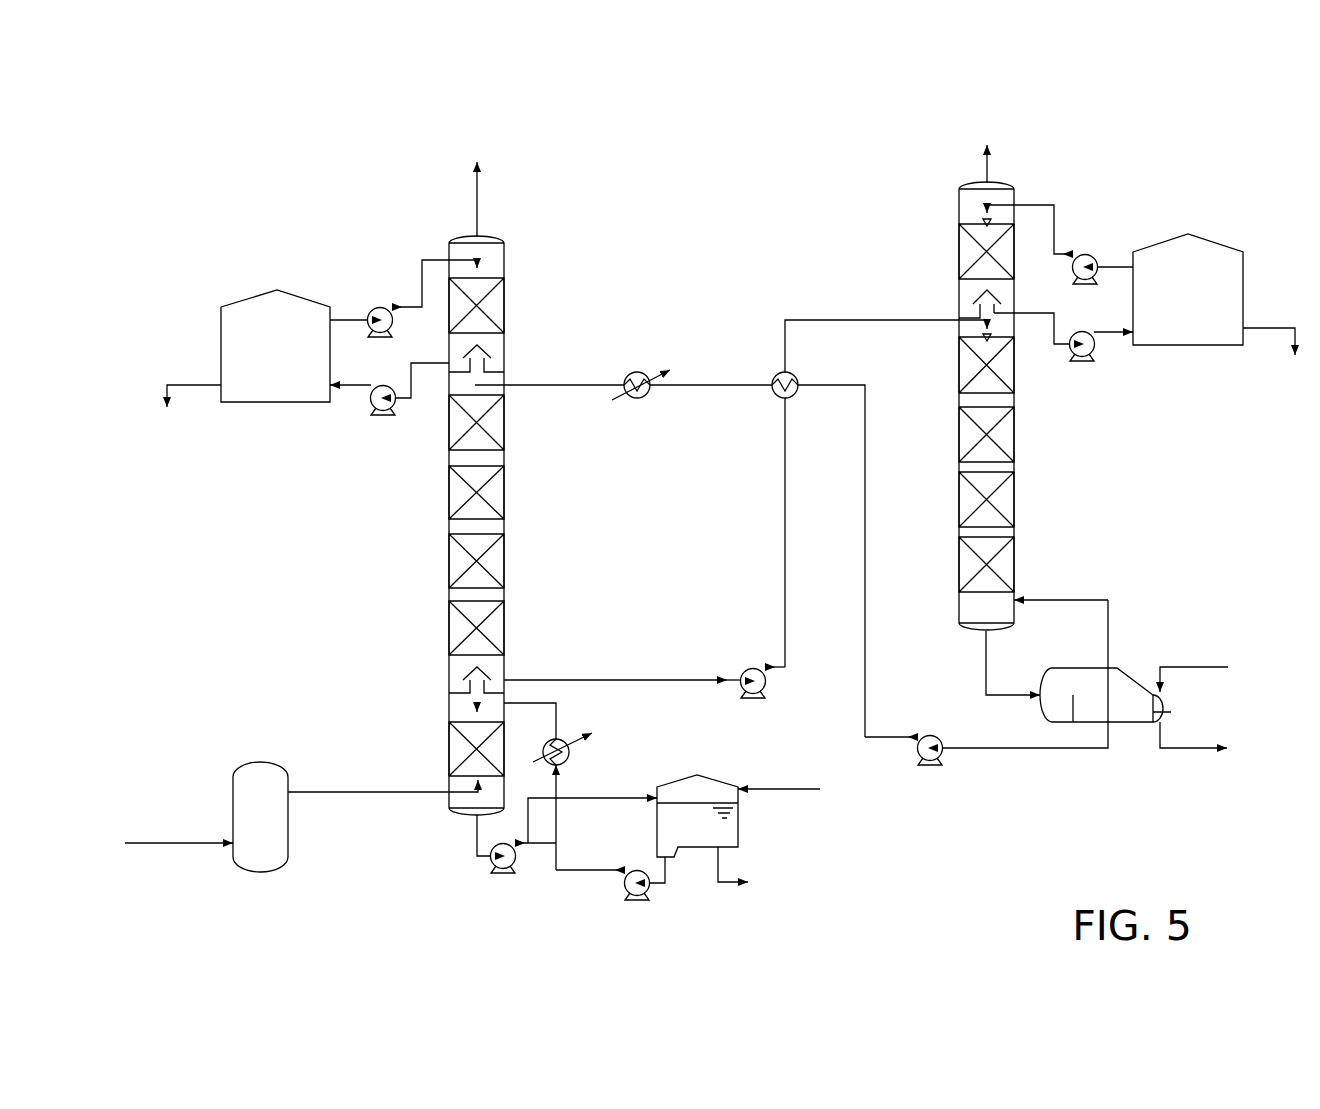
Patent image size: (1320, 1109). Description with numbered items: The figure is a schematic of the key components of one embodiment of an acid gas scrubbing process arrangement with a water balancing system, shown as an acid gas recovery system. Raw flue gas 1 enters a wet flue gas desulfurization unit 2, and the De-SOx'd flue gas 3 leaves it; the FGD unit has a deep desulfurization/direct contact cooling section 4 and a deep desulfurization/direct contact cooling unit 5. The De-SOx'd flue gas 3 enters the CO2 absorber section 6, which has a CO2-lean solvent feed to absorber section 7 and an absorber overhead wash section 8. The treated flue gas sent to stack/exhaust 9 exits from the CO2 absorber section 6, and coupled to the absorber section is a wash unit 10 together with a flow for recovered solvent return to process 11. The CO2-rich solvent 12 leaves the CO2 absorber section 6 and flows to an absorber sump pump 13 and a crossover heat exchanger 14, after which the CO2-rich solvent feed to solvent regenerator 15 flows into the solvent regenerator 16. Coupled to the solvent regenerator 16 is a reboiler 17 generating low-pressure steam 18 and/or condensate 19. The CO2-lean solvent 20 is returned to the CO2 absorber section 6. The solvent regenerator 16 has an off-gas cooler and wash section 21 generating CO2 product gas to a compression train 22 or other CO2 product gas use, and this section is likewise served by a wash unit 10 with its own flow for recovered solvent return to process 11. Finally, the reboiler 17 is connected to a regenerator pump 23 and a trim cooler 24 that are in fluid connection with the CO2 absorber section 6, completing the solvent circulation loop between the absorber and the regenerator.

The raw flue gas 1 is at (179, 829).
The wet flue gas desulfurization unit 2 is at (260, 817).
The De-SOx'd flue gas 3 is at (383, 777).
The deep desulfurization/direct contact cooling section 4 is at (447, 745).
The deep desulfurization/direct contact cooling unit 5 is at (648, 801).
The CO2 absorber section 6 is at (443, 532).
The CO2-lean solvent feed to absorber section 7 is at (670, 544).
The absorber overhead wash section 8 is at (505, 303).
The treated flue gas sent to stack/exhaust 9 is at (476, 174).
The wash unit 10 is at (732, 310).
The recovered solvent return to process 11 is at (730, 382).
The CO2-rich solvent 12 is at (622, 665).
The absorber sump pump 13 is at (761, 695).
The crossover heat exchanger 14 is at (798, 371).
The CO2-rich solvent feed to solvent regenerator 15 is at (888, 478).
The solvent regenerator 16 is at (1017, 458).
The reboiler 17 is at (1078, 674).
The low-pressure steam 18 is at (1215, 673).
The condensate 19 is at (1218, 741).
The CO2-lean solvent 20 is at (1025, 674).
The off-gas cooler and wash section 21 is at (958, 248).
The CO2 product gas to compression train 22 is at (986, 147).
The regenerator pump 23 is at (905, 764).
The trim cooler 24 is at (641, 372).